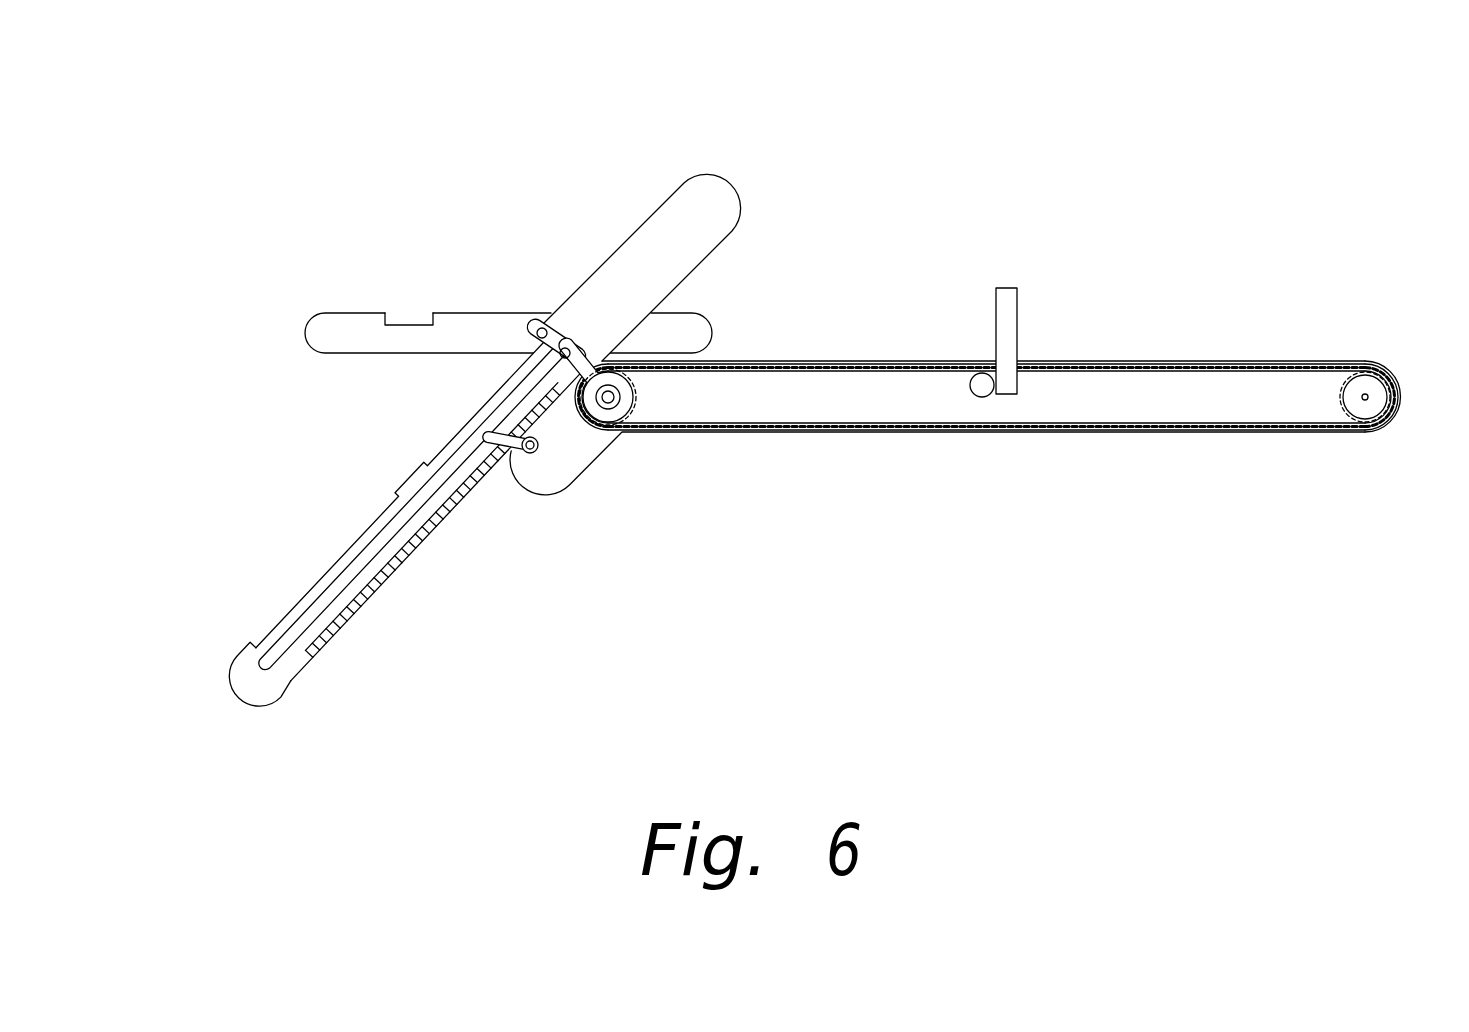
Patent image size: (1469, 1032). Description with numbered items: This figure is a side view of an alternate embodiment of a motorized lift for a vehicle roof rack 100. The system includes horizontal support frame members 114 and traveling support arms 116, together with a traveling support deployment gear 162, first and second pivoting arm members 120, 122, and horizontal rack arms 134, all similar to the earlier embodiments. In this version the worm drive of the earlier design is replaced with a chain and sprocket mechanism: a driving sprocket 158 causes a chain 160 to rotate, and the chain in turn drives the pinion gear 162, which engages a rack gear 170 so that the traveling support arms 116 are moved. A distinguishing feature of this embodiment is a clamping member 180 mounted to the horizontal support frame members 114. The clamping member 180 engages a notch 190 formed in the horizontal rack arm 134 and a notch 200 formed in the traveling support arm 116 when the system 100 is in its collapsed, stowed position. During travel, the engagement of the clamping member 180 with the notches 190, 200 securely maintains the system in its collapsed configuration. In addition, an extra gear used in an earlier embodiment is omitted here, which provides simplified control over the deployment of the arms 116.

The motorized lift for a vehicle roof rack 100 is at (1181, 186).
The horizontal support frame member 114 is at (1395, 423).
The traveling support arm 116 is at (235, 695).
The first pivoting arm member 120 is at (493, 431).
The second pivoting arm member 122 is at (568, 335).
The horizontal rack arm 134 is at (305, 335).
The driving sprocket 158 is at (1362, 380).
The chain 160 is at (1135, 434).
The traveling support deployment gear (pinion gear) 162 is at (636, 400).
The rack gear 170 is at (386, 584).
The clamping member 180 is at (1010, 288).
The notch 190 is at (403, 324).
The notch 200 is at (415, 487).